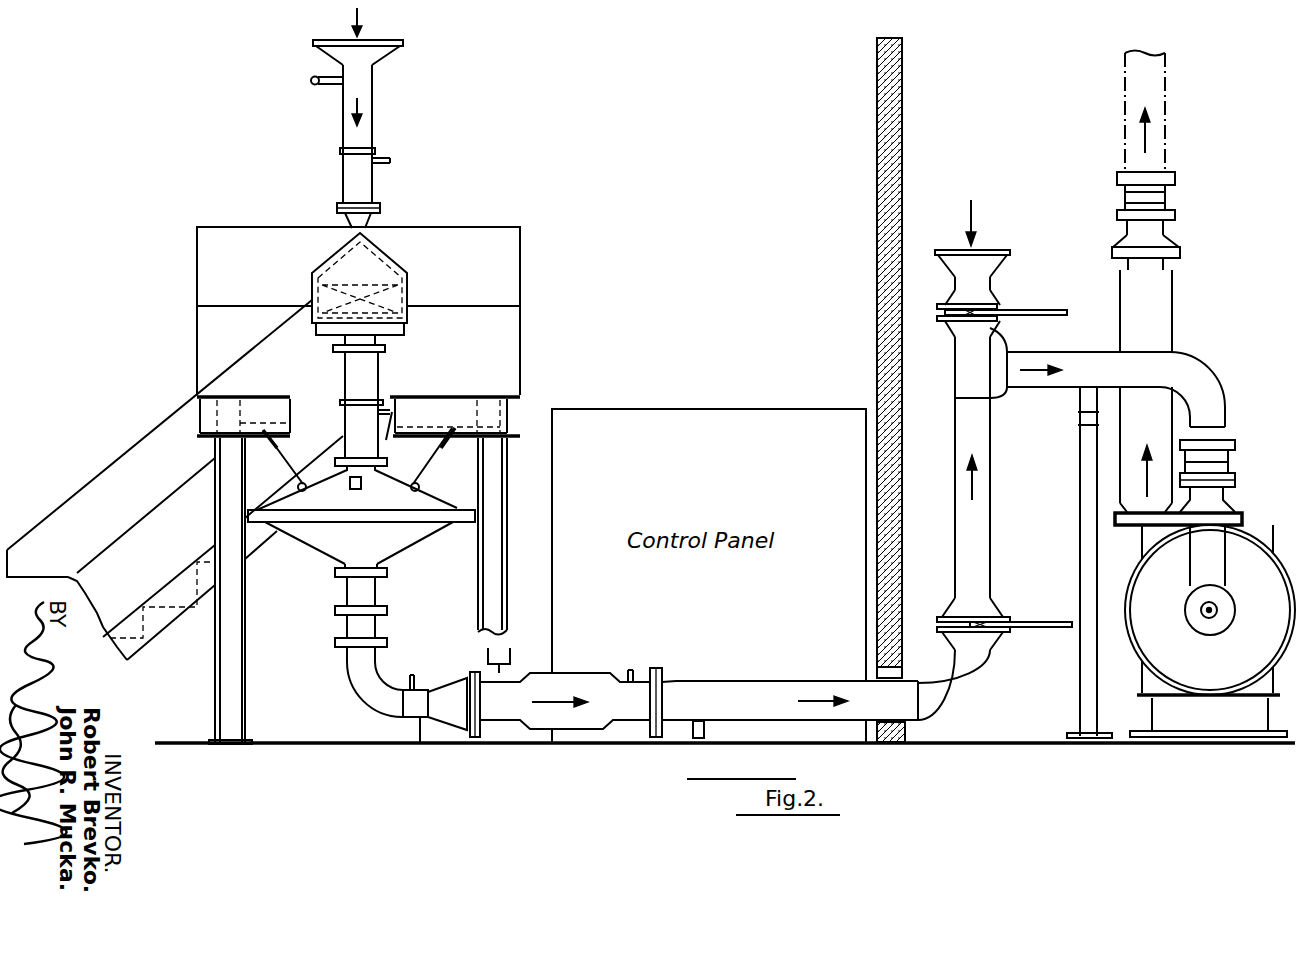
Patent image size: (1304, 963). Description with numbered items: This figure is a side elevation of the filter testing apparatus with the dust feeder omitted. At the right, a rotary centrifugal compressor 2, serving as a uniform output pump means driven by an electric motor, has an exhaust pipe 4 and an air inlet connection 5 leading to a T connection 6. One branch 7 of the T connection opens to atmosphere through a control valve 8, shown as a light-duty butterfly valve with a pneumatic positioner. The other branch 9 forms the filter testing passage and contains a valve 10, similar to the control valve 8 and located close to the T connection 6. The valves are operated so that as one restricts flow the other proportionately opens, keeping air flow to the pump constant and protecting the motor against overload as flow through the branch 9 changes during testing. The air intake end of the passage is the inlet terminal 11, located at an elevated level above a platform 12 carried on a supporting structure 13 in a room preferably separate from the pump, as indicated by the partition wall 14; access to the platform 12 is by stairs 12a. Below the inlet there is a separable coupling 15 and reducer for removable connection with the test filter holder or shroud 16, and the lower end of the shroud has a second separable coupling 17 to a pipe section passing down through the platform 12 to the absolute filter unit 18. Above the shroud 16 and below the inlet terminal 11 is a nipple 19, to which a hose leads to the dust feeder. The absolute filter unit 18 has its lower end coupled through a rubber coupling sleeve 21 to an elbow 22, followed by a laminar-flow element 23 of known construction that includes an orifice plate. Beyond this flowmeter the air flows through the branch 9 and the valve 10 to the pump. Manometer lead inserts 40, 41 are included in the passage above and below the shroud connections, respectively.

The rotary centrifugal compressor 2 is at (1245, 558).
The exhaust pipe 4 is at (1176, 293).
The air inlet connection 5 is at (1187, 367).
The T connection 6 is at (953, 385).
The branch 7 is at (999, 344).
The control valve 8 is at (1003, 306).
The branch 9 is at (373, 128).
The valve 10 is at (1000, 633).
The inlet terminal 11 is at (332, 60).
The platform 12 is at (487, 392).
The stairs 12a is at (127, 657).
The supporting structure 13 is at (225, 483).
The partition wall 14 is at (882, 200).
The separable coupling 15 is at (383, 210).
The test filter holder or shroud 16 is at (407, 287).
The second separable coupling 17 is at (387, 352).
The absolute filter unit 18 is at (327, 540).
The nipple 19 is at (327, 85).
The rubber coupling sleeve 21 is at (380, 624).
The elbow 22 is at (365, 697).
The laminar-flow element 23 is at (582, 718).
The manometer lead insert 40 is at (393, 160).
The manometer lead insert 41 is at (392, 428).